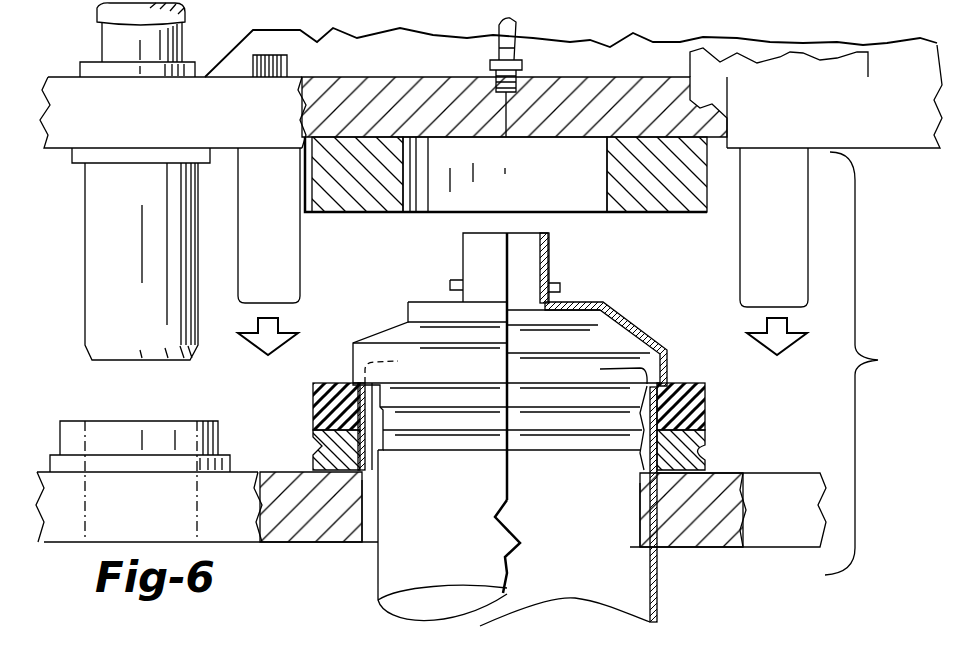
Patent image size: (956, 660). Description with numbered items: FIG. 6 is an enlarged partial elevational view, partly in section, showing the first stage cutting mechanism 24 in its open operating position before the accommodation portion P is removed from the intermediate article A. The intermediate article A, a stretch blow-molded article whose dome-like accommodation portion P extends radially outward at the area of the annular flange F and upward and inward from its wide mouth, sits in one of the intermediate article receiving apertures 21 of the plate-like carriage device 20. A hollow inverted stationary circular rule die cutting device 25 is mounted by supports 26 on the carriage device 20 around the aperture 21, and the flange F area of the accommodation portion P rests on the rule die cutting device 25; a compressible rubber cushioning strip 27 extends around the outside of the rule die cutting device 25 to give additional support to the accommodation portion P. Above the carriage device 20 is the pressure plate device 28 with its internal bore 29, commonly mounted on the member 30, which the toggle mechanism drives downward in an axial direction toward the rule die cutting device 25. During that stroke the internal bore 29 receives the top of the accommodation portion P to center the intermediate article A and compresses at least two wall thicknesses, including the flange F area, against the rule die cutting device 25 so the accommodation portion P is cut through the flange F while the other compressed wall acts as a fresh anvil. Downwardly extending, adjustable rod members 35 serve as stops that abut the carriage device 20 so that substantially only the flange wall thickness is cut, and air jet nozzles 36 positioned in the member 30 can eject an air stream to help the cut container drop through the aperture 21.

The carriage device 20 is at (240, 522).
The intermediate article receiving apertures 21 is at (370, 528).
The cutting mechanism 24 is at (691, 236).
The rule die cutting device 25 is at (367, 440).
The supports 26 is at (313, 447).
The cushioning strip 27 is at (313, 396).
The pressure plate device 28 is at (300, 170).
The internal bore 29 is at (410, 192).
The member 30 is at (247, 121).
The rod members 35 is at (282, 222).
The air jet nozzles 36 is at (516, 80).
The intermediate article A is at (452, 549).
The accommodation portion P is at (430, 338).
The flange F is at (506, 366).